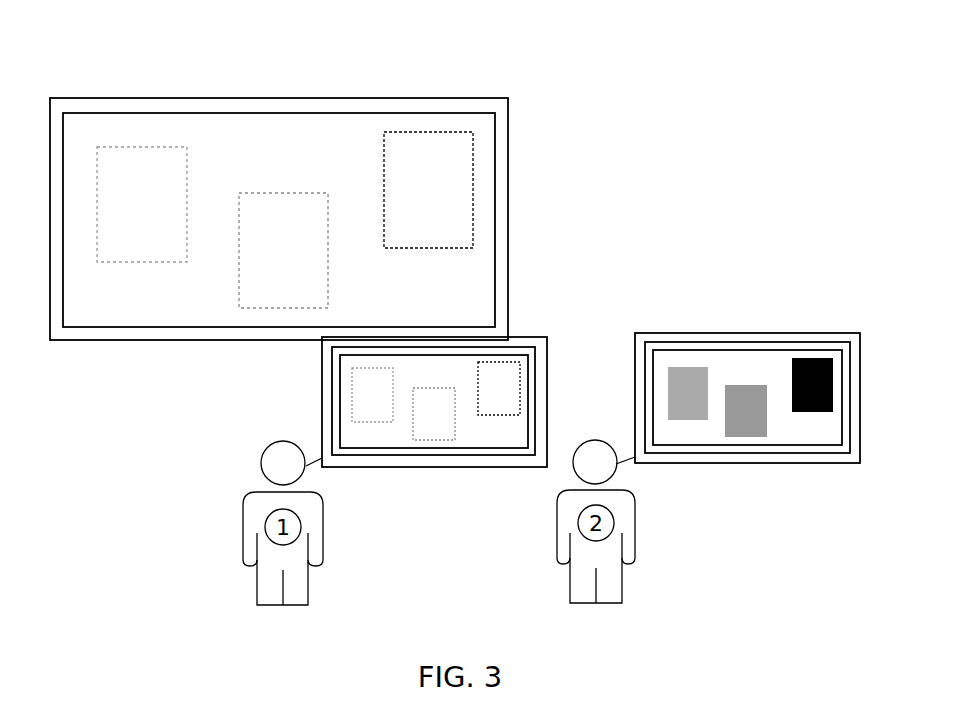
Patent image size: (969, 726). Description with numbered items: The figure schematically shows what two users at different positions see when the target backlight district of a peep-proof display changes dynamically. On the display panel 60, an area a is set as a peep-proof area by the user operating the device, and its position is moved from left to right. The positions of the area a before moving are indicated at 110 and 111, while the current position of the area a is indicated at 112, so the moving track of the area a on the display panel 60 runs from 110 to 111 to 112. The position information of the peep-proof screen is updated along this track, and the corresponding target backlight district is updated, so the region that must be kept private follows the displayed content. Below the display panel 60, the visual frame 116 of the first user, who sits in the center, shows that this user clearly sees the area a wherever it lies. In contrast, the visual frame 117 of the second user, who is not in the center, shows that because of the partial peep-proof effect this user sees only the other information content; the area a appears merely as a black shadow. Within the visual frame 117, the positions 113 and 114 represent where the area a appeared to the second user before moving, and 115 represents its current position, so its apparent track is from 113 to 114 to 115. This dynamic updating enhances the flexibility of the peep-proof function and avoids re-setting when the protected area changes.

The display panel 60 is at (463, 272).
The position of the area a before moving 110 is at (130, 147).
The position of the area a before moving 111 is at (291, 193).
The current position of the area a 112 is at (427, 130).
The position of the area a in user ②'s eyes before moving 113 is at (676, 367).
The position of the area a in user ②'s eyes before moving 114 is at (733, 386).
The current position of the area a in user ②'s eyes 115 is at (810, 358).
The visual frame of the user ① 116 is at (528, 348).
The visual frame of the user ② 117 is at (773, 335).